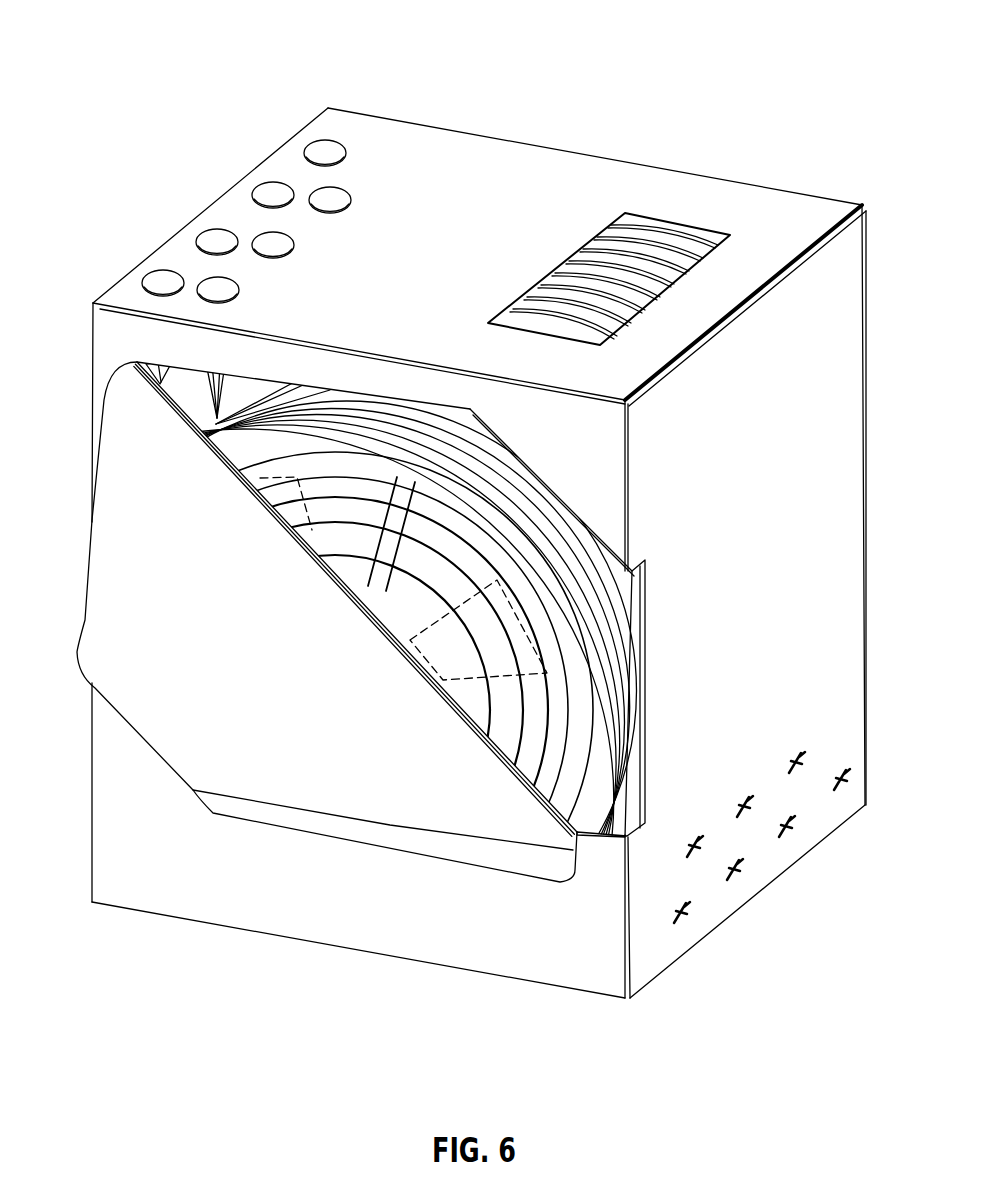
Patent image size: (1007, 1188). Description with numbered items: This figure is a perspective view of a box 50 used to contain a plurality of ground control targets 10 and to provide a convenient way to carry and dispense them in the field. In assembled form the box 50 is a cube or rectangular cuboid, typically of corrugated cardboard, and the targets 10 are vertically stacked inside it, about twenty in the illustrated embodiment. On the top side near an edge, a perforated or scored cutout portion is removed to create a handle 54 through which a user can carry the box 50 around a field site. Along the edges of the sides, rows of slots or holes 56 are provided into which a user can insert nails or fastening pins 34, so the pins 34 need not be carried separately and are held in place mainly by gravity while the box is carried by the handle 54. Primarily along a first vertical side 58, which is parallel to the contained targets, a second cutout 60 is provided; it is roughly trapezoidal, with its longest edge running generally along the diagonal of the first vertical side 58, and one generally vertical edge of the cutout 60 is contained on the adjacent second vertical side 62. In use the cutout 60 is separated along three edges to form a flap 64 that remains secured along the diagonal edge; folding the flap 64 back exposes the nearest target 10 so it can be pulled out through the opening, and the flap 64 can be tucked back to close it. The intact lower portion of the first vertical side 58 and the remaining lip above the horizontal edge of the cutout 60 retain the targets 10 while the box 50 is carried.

The ground control target 10 is at (577, 697).
The fastening pin 34 is at (315, 200).
The box 50 is at (669, 104).
The handle 54 is at (703, 227).
The slots or holes 56 is at (745, 808).
The first vertical side 58 is at (253, 892).
The second cutout 60 is at (177, 352).
The second vertical side 62 is at (748, 420).
The flap 64 is at (97, 618).